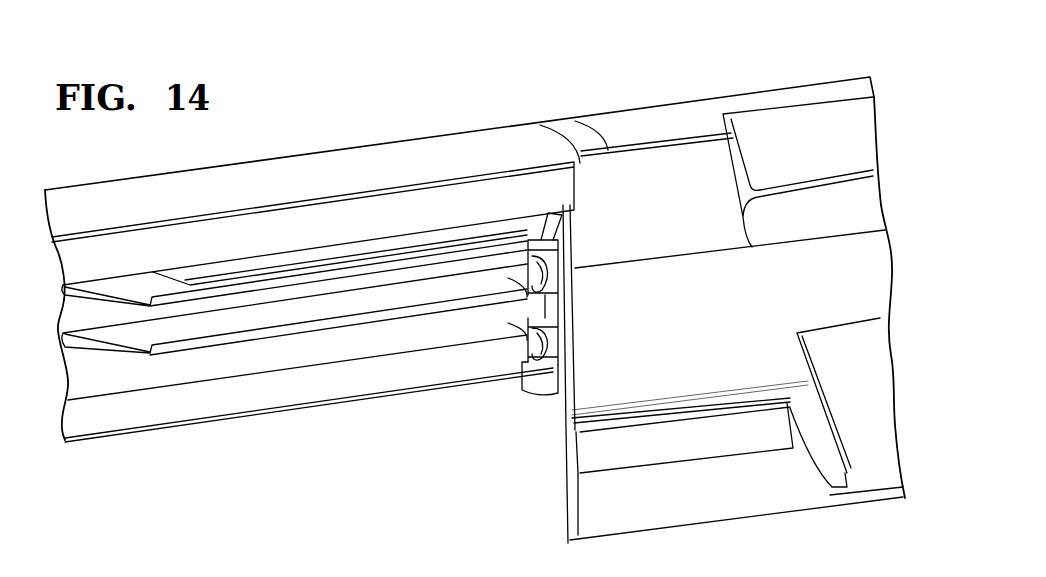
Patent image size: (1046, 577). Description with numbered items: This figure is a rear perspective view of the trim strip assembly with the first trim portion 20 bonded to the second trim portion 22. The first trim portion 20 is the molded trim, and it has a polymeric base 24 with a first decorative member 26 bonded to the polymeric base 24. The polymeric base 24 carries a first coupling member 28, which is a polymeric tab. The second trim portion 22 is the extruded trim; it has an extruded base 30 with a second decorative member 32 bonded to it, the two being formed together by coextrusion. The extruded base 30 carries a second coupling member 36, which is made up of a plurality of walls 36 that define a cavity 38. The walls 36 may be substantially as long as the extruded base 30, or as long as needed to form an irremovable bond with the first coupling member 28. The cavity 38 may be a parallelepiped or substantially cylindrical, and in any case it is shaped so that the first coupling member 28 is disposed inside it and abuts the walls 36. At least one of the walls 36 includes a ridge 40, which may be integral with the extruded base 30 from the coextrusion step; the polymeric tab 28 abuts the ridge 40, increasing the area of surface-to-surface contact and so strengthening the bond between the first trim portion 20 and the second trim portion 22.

The first trim portion 20 is at (350, 146).
The second trim portion 22 is at (610, 108).
The polymeric base 24 is at (262, 237).
The first decorative member 26 is at (447, 158).
The first coupling member 28 is at (535, 320).
The extruded base 30 is at (703, 173).
The second decorative member 32 is at (695, 125).
The second coupling member 36 is at (560, 397).
The cavity 38 is at (550, 304).
The ridge 40 is at (566, 359).